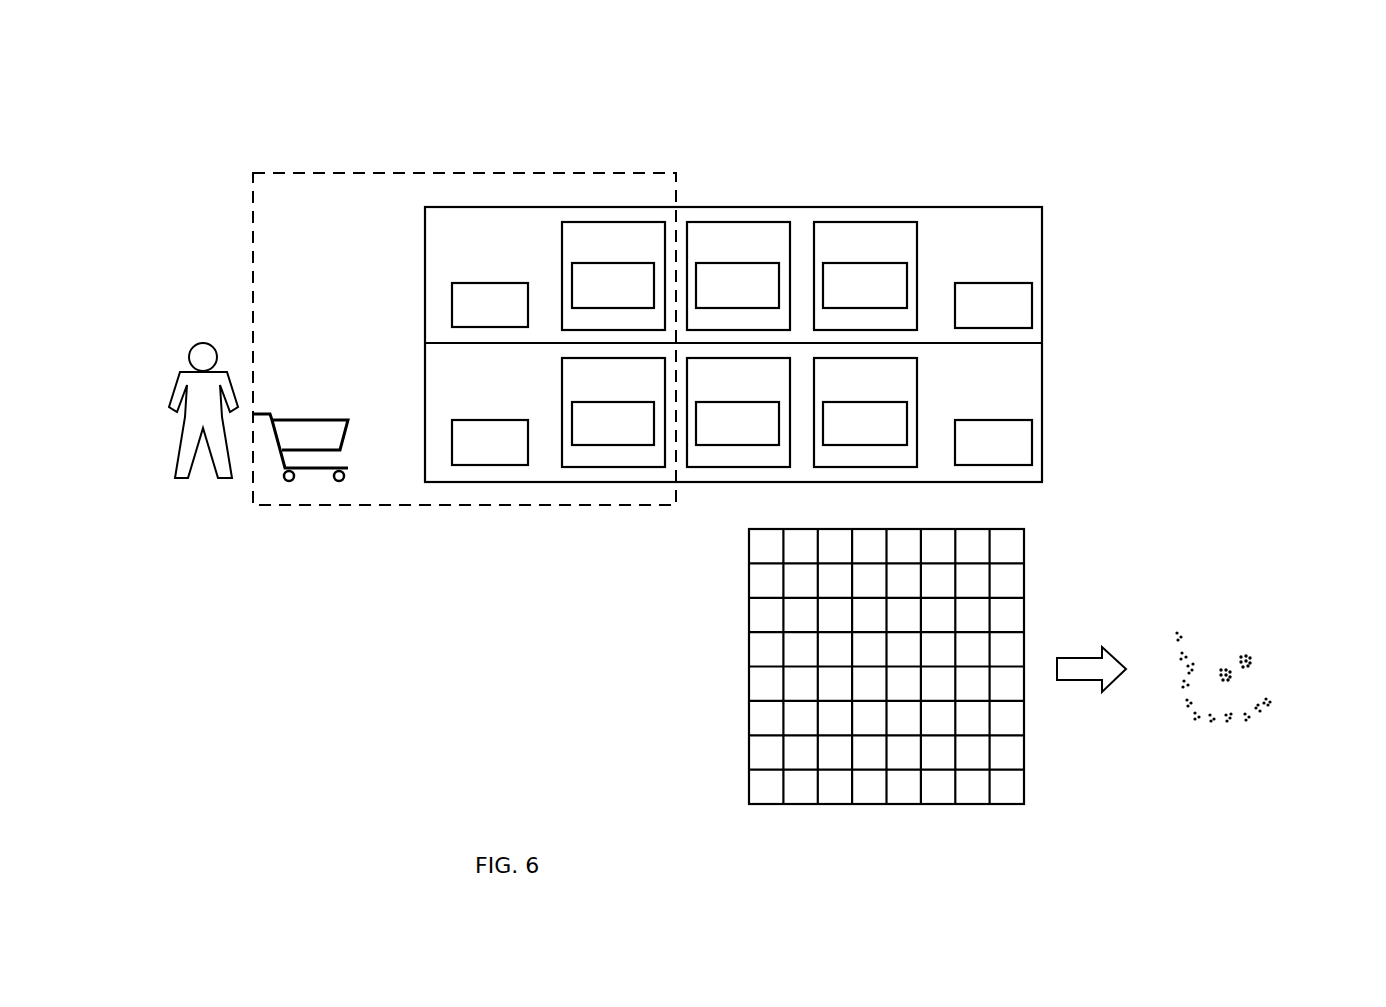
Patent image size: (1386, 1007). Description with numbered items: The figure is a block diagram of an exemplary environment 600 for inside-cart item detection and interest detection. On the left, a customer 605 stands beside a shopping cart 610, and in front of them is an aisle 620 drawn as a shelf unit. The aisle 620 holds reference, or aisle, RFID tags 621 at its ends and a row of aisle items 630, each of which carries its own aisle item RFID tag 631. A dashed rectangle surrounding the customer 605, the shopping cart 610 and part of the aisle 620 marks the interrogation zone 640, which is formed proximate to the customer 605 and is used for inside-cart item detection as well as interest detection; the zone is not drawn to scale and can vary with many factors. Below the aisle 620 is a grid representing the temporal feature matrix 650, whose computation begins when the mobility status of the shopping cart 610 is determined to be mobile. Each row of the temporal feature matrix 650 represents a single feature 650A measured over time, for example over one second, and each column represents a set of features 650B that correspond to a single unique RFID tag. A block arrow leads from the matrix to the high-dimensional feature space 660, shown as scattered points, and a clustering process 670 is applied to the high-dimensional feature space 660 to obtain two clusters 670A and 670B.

The environment 600 is at (288, 86).
The customer 605 is at (178, 330).
The shopping cart 610 is at (315, 488).
The aisle 620 is at (1047, 185).
The reference RFID tags 621 is at (511, 318).
The aisle items 630 is at (634, 256).
The aisle item RFID tags 631 is at (634, 298).
The interrogation zone 640 is at (679, 170).
The temporal feature matrix 650 is at (1030, 508).
The single feature 650A is at (835, 613).
The set of features 650B is at (1009, 578).
The high-dimensional feature space 660 is at (1228, 757).
The clustering process 670 is at (1275, 800).
The cluster 670A is at (1221, 662).
The cluster 670B is at (1259, 650).